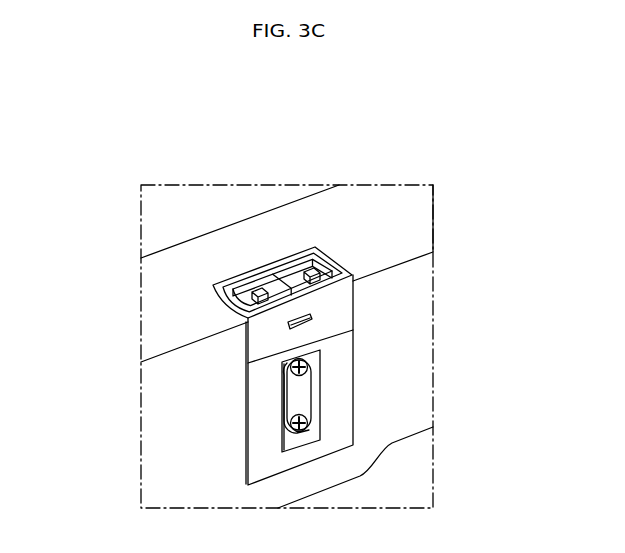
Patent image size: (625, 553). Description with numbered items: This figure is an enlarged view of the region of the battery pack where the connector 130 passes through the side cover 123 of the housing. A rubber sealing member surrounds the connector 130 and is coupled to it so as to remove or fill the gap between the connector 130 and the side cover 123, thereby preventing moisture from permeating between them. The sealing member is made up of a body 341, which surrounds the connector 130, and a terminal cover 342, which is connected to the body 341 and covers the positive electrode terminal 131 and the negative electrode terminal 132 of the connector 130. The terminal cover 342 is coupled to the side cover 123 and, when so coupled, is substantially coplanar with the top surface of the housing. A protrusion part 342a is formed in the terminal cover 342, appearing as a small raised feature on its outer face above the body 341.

The side cover 123 is at (417, 387).
The connector 130 is at (257, 303).
The positive electrode terminal 131 is at (320, 202).
The negative electrode terminal 132 is at (254, 292).
The body 341 is at (262, 397).
The terminal cover 342 is at (384, 315).
The protrusion part 342a is at (313, 318).